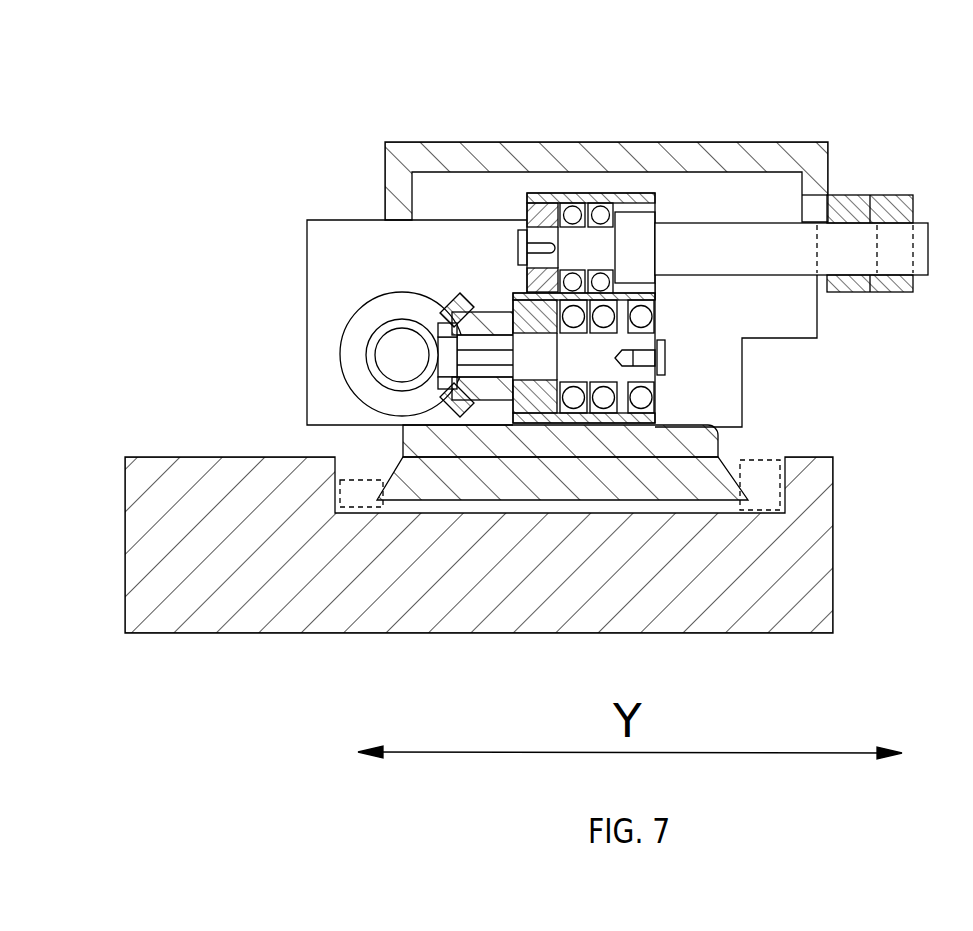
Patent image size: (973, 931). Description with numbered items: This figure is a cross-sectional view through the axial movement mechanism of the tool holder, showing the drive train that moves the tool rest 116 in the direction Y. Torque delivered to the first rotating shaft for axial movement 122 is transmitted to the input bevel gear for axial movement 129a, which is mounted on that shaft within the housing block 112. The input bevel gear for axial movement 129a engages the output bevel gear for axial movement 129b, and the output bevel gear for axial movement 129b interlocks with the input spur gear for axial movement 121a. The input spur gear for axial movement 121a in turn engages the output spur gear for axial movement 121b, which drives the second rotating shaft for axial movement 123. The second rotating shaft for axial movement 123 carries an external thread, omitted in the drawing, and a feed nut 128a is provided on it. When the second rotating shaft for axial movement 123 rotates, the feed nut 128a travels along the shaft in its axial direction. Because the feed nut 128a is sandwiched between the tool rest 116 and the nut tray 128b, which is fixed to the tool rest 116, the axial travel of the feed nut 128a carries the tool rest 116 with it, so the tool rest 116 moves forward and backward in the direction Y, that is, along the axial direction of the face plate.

The base block 112 is at (327, 263).
The tool rest 116 is at (673, 165).
The input spur gear for axial movement 121a is at (447, 400).
The output spur gear for axial movement 121b is at (538, 210).
The first rotating shaft for axial movement 122 is at (392, 352).
The second rotating shaft for axial movement 123 is at (747, 242).
The feed nut 128a is at (856, 218).
The nut tray 128b is at (893, 293).
The input bevel gear for axial movement 129a is at (362, 317).
The output bevel gear for axial movement 129b is at (458, 297).